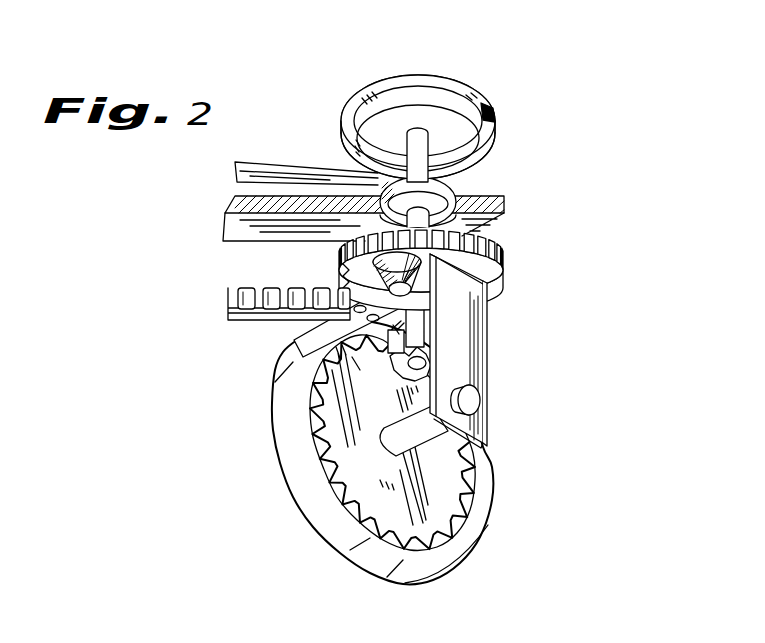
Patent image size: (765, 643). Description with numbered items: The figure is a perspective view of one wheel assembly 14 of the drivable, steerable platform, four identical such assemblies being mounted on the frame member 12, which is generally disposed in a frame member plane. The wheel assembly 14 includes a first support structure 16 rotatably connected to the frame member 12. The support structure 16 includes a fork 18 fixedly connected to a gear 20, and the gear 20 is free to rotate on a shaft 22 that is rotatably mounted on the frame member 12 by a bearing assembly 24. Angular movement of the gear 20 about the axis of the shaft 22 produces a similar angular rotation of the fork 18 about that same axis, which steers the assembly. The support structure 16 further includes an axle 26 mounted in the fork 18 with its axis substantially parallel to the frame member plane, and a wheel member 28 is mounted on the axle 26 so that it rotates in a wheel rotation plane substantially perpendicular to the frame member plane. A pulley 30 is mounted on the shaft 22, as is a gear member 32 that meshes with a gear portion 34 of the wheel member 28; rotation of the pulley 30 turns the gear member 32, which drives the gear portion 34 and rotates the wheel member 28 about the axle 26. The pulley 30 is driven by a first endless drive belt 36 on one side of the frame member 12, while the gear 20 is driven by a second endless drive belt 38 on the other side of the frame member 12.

The frame member 12 is at (506, 207).
The wheel assembly 14 is at (605, 164).
The first support structure 16 is at (477, 334).
The fork 18 is at (487, 372).
The gear 20 is at (342, 264).
The shaft 22 is at (428, 144).
The bearing assembly 24 is at (442, 190).
The axle 26 is at (481, 397).
The wheel member 28 is at (300, 502).
The pulley 30 is at (357, 92).
The gear member 32 is at (395, 372).
The gear portion 34 is at (313, 408).
The first endless drive belt 36 is at (488, 99).
The second endless drive belt 38 is at (262, 290).